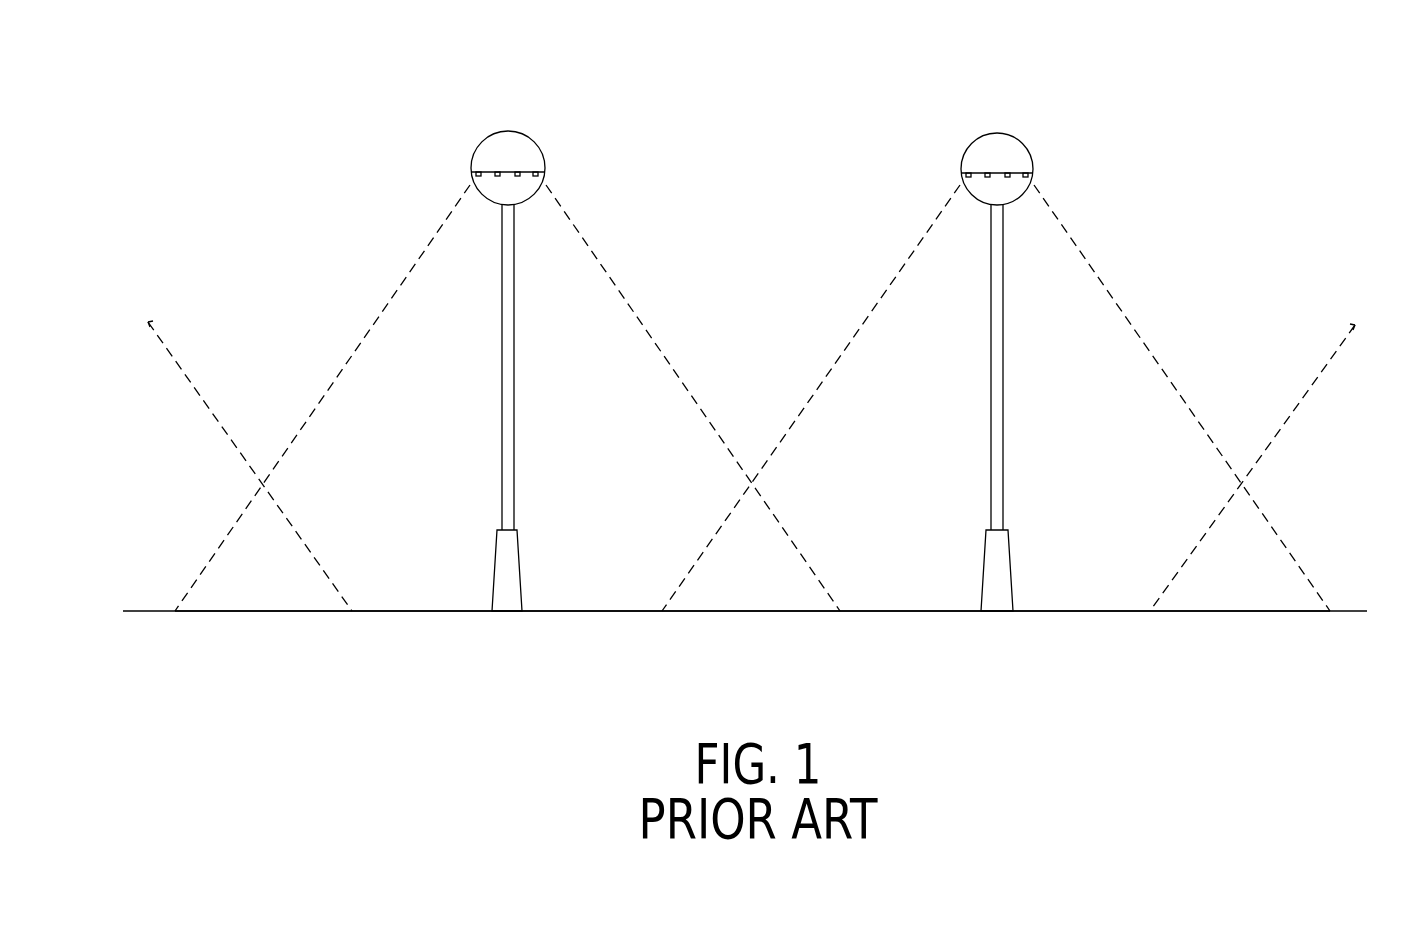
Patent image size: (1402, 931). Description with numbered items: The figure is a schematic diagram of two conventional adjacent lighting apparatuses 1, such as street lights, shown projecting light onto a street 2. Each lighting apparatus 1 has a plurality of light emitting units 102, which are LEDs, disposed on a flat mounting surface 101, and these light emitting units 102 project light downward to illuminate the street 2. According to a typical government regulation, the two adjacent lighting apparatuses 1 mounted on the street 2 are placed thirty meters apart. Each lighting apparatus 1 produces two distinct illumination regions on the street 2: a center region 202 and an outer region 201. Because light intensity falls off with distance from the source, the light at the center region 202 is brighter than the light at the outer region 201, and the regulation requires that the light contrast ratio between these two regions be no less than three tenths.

The lighting apparatus 1 is at (500, 132).
The flat mounting surface 101 is at (508, 171).
The light emitting units 102 is at (497, 178).
The street 2 is at (148, 609).
The outer region 201 is at (270, 612).
The center region 202 is at (556, 612).